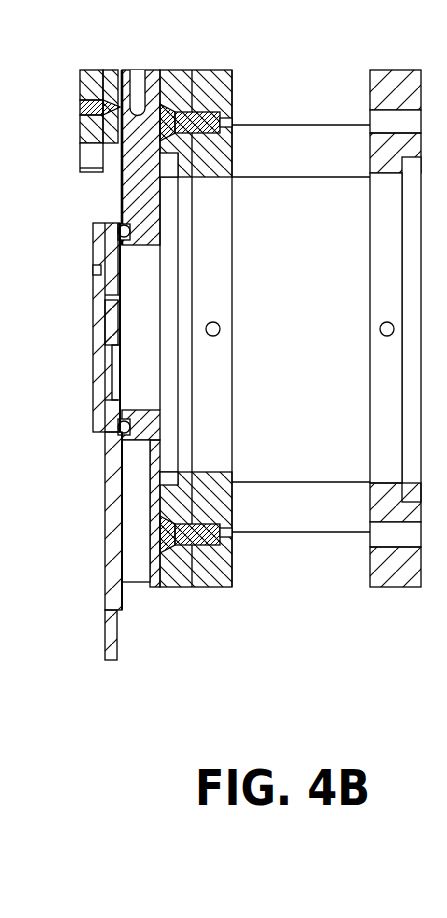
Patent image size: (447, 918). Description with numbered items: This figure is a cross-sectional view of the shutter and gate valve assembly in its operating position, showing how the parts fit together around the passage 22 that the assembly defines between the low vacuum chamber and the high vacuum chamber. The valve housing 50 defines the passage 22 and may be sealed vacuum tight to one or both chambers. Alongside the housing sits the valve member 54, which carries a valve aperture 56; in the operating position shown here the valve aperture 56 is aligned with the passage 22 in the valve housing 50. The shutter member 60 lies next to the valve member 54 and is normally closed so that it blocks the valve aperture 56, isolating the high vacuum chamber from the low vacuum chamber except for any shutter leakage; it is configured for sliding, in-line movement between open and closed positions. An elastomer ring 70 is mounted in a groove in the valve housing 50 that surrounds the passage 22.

The passage 22 is at (148, 293).
The valve housing 50 is at (131, 60).
The valve member 54 is at (105, 527).
The valve aperture 56 is at (113, 337).
The shutter member 60 is at (85, 327).
The elastomer ring 70 is at (118, 229).